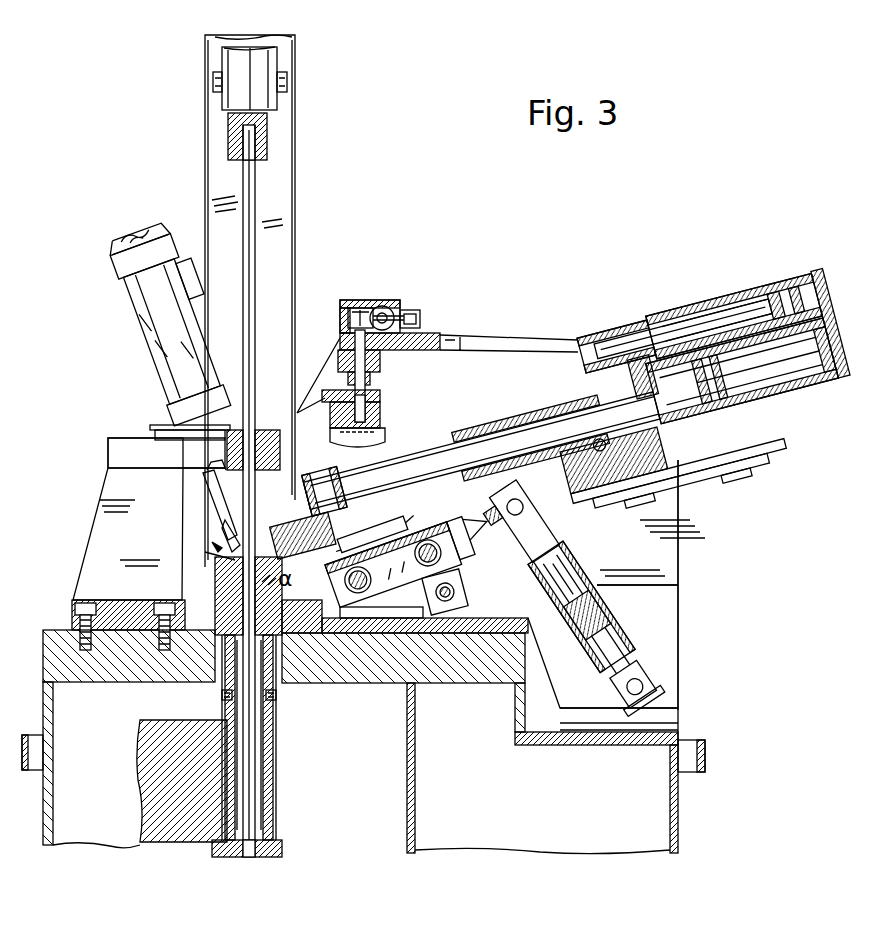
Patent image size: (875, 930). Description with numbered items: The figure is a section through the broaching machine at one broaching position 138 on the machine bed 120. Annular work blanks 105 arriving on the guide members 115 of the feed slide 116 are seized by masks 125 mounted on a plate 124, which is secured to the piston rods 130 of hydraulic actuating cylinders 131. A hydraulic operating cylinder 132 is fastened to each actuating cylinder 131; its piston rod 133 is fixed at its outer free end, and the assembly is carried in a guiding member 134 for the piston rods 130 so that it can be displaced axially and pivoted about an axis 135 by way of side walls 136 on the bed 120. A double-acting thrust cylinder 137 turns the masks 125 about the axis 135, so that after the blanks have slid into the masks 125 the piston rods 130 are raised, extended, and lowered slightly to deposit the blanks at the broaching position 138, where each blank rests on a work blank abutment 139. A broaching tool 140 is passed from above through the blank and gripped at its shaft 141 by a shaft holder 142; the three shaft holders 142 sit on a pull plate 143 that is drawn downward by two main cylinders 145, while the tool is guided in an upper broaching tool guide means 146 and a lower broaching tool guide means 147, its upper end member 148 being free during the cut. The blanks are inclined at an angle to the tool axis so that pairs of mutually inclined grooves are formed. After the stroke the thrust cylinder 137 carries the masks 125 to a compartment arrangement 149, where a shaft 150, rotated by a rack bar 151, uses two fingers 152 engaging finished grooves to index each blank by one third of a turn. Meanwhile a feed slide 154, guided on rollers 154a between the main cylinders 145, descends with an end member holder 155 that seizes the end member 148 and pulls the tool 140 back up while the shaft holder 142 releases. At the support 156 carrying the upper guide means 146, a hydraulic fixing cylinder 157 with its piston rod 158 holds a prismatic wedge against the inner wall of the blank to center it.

The work blank 105 is at (235, 510).
The guide member 115 is at (405, 535).
The feed slide 116 is at (452, 584).
The machine bed 120 is at (672, 810).
The plate 124 is at (302, 490).
The mask 125 is at (290, 494).
The piston rod 130 is at (450, 457).
The actuating cylinder 131 is at (815, 380).
The hydraulic operating cylinder 132 is at (738, 298).
The piston rod 133 is at (690, 325).
The guiding member 134 is at (525, 410).
The axis 135 is at (598, 464).
The side wall 136 is at (672, 546).
The thrust cylinder 137 is at (615, 612).
The broaching position 138 is at (215, 545).
The work blank abutment 139 is at (225, 557).
The broaching tool 140 is at (246, 362).
The shaft 141 is at (278, 696).
The shaft holder 142 is at (222, 696).
The pull plate 143 is at (150, 790).
The main cylinder 145 is at (290, 248).
The upper broaching tool guide means 146 is at (228, 455).
The lower broaching tool guide means 147 is at (200, 585).
The upper end member 148 is at (248, 152).
The compartment arrangement 149 is at (400, 311).
The shaft 150 is at (342, 340).
The rack bar 151 is at (370, 310).
The finger 152 is at (372, 425).
The feed slide 154 is at (277, 62).
The roller 154a is at (213, 80).
The end member holder 155 is at (267, 128).
The support 156 is at (113, 478).
The hydraulic fixing cylinder 157 is at (150, 348).
The piston rod 158 is at (182, 466).